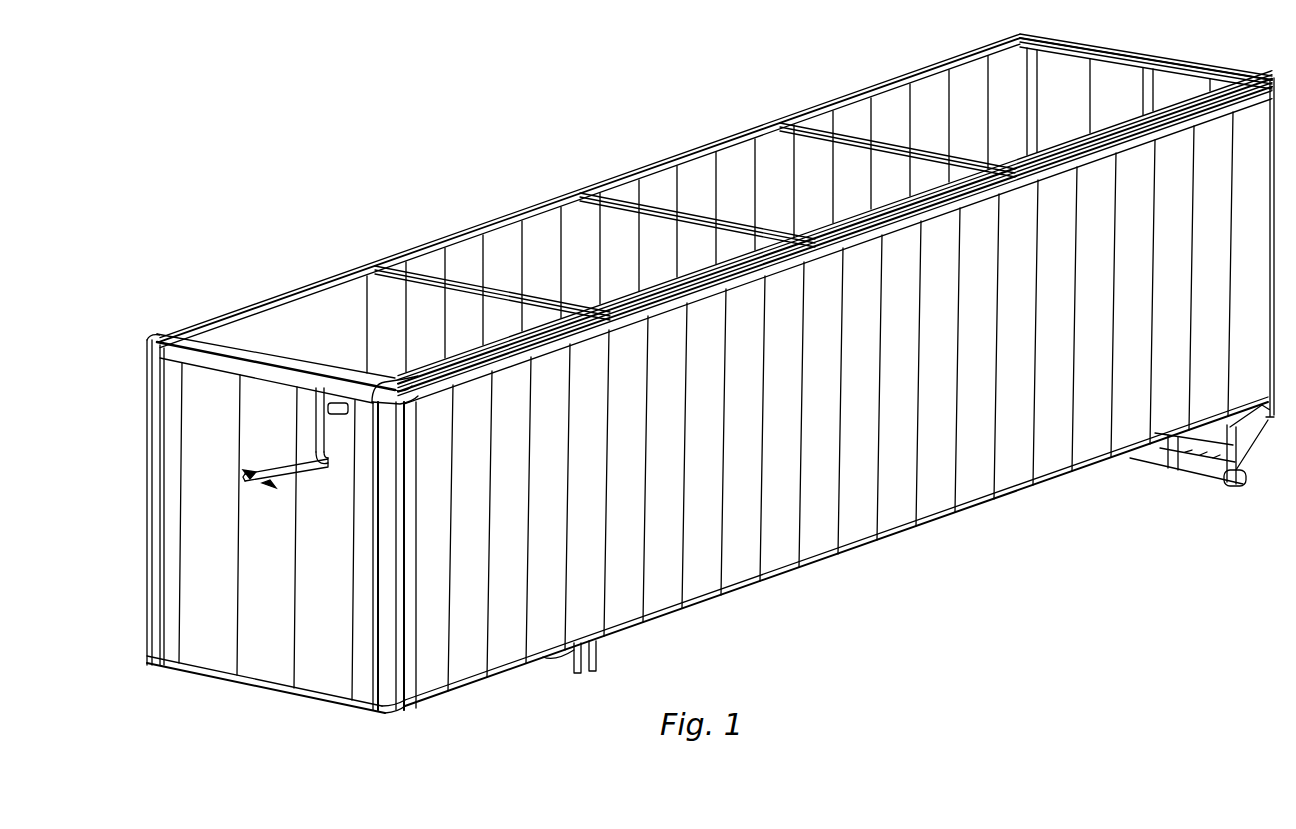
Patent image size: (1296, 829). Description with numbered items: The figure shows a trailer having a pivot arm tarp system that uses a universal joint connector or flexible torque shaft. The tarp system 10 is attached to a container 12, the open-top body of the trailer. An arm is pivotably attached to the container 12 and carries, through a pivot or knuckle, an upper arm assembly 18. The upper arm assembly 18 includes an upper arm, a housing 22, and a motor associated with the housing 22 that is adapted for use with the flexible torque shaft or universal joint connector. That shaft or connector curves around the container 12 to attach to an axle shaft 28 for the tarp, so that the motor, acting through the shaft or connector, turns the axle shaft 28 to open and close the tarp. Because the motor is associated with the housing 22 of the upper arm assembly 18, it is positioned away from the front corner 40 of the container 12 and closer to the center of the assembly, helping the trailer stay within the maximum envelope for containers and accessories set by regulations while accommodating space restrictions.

The tarp system 10 is at (382, 385).
The container 12 is at (770, 150).
The upper arm assembly 18 is at (314, 430).
The housing 22 is at (310, 318).
The axle shaft 28 is at (1252, 85).
The corner 40 is at (368, 382).